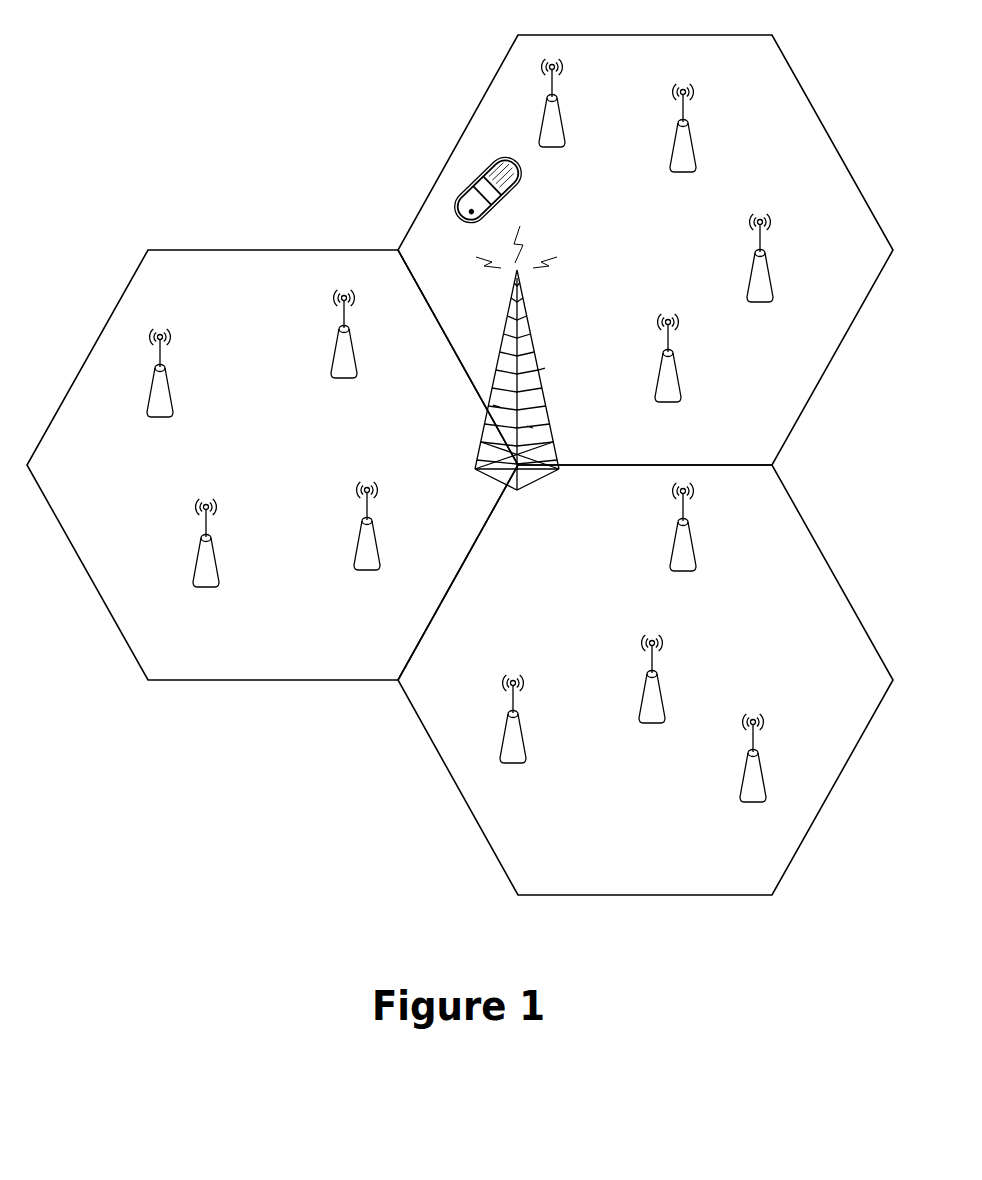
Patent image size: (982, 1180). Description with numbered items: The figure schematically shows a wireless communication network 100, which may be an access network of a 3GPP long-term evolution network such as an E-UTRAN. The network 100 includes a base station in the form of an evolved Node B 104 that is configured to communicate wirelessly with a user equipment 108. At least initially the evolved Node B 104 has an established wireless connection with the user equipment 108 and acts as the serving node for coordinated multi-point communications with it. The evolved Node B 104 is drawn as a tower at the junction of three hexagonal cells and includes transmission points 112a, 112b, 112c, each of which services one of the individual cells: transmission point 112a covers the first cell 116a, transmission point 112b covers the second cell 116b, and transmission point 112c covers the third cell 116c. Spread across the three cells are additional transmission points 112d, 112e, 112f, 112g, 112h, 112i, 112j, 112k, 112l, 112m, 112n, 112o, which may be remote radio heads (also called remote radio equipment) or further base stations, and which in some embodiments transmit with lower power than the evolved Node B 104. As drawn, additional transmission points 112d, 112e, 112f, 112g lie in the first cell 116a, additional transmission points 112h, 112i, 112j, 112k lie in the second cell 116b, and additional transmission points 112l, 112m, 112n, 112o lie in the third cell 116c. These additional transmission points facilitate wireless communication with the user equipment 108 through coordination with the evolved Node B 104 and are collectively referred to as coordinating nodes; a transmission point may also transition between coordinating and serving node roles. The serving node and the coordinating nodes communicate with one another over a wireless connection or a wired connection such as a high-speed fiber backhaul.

The wireless communication network 100 is at (195, 98).
The evolved Node B 104 is at (503, 335).
The user equipment 108 is at (478, 182).
The transmission point 112a is at (540, 370).
The transmission point 112b is at (502, 407).
The transmission point 112c is at (533, 428).
The additional transmission point 112d is at (537, 118).
The additional transmission point 112e is at (678, 134).
The additional transmission point 112f is at (748, 266).
The additional transmission point 112g is at (683, 380).
The additional transmission point 112h is at (173, 397).
The additional transmission point 112i is at (333, 348).
The additional transmission point 112j is at (195, 560).
The additional transmission point 112k is at (357, 546).
The additional transmission point 112l is at (673, 548).
The additional transmission point 112m is at (527, 748).
The additional transmission point 112n is at (633, 697).
The additional transmission point 112o is at (742, 783).
The first cell 116a is at (789, 182).
The second cell 116b is at (133, 492).
The third cell 116c is at (573, 599).